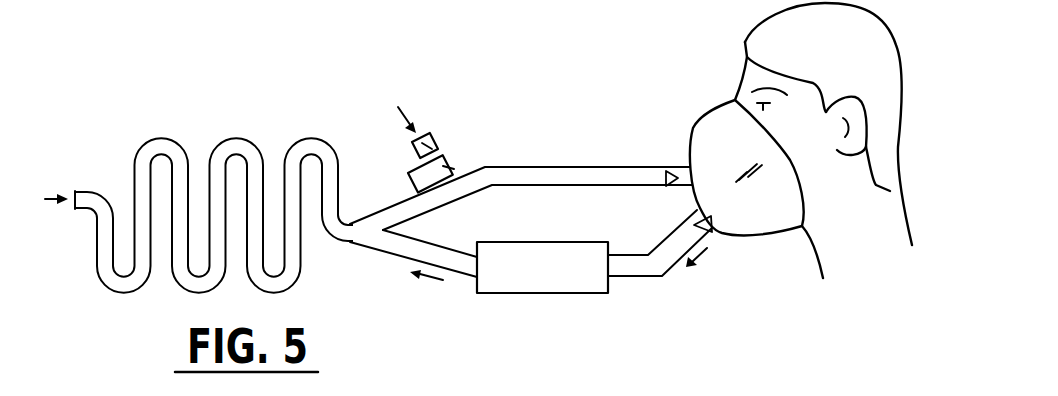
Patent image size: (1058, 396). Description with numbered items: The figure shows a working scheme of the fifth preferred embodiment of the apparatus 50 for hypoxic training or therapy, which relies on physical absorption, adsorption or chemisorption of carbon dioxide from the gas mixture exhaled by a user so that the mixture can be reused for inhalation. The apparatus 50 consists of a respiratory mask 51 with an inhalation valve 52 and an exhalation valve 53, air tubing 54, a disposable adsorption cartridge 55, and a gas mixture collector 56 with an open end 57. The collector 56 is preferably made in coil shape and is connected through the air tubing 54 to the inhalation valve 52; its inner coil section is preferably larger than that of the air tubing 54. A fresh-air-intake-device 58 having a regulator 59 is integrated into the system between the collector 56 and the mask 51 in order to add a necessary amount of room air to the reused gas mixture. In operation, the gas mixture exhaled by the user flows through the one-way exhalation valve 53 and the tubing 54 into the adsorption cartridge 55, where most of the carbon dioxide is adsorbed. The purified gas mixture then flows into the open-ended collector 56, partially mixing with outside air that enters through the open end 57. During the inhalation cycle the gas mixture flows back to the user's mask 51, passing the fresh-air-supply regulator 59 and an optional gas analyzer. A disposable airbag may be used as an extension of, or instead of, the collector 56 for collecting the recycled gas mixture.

The apparatus for hypoxic training or therapy 50 is at (478, 183).
The respiratory mask 51 is at (723, 133).
The inhalation valve 52 is at (672, 170).
The exhalation valve 53 is at (713, 230).
The air tubing 54 is at (640, 270).
The disposable adsorption cartridge 55 is at (527, 283).
The gas mixture collector 56 is at (237, 147).
The open end 57 is at (73, 190).
The fresh-air-intake-device 58 is at (430, 150).
The regulator 59 is at (457, 163).